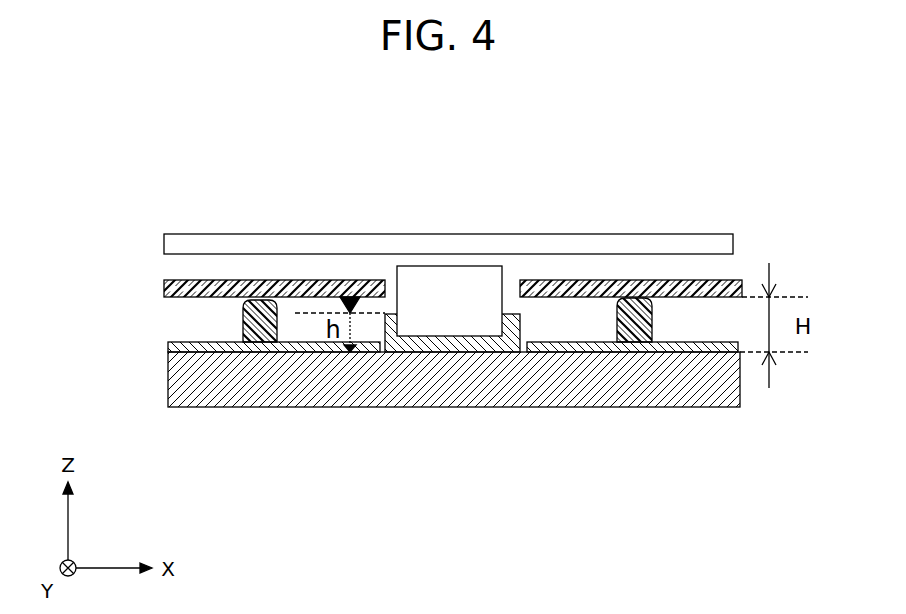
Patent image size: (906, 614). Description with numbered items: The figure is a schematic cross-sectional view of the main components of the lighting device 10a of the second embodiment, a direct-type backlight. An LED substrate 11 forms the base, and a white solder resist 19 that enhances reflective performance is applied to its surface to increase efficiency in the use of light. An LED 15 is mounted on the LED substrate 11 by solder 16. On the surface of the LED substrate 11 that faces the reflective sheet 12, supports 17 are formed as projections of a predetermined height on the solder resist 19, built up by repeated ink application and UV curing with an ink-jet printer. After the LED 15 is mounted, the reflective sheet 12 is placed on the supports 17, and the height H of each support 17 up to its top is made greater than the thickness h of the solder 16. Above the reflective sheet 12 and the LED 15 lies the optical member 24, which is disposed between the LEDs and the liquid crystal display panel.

The lighting device 10a is at (745, 162).
The LED substrate 11 is at (168, 380).
The reflective sheet 12 is at (365, 280).
The LED 15 is at (445, 280).
The solder 16 is at (443, 350).
The support 17 is at (258, 298).
The solder resist 19 is at (677, 340).
The optical member 24 is at (164, 247).